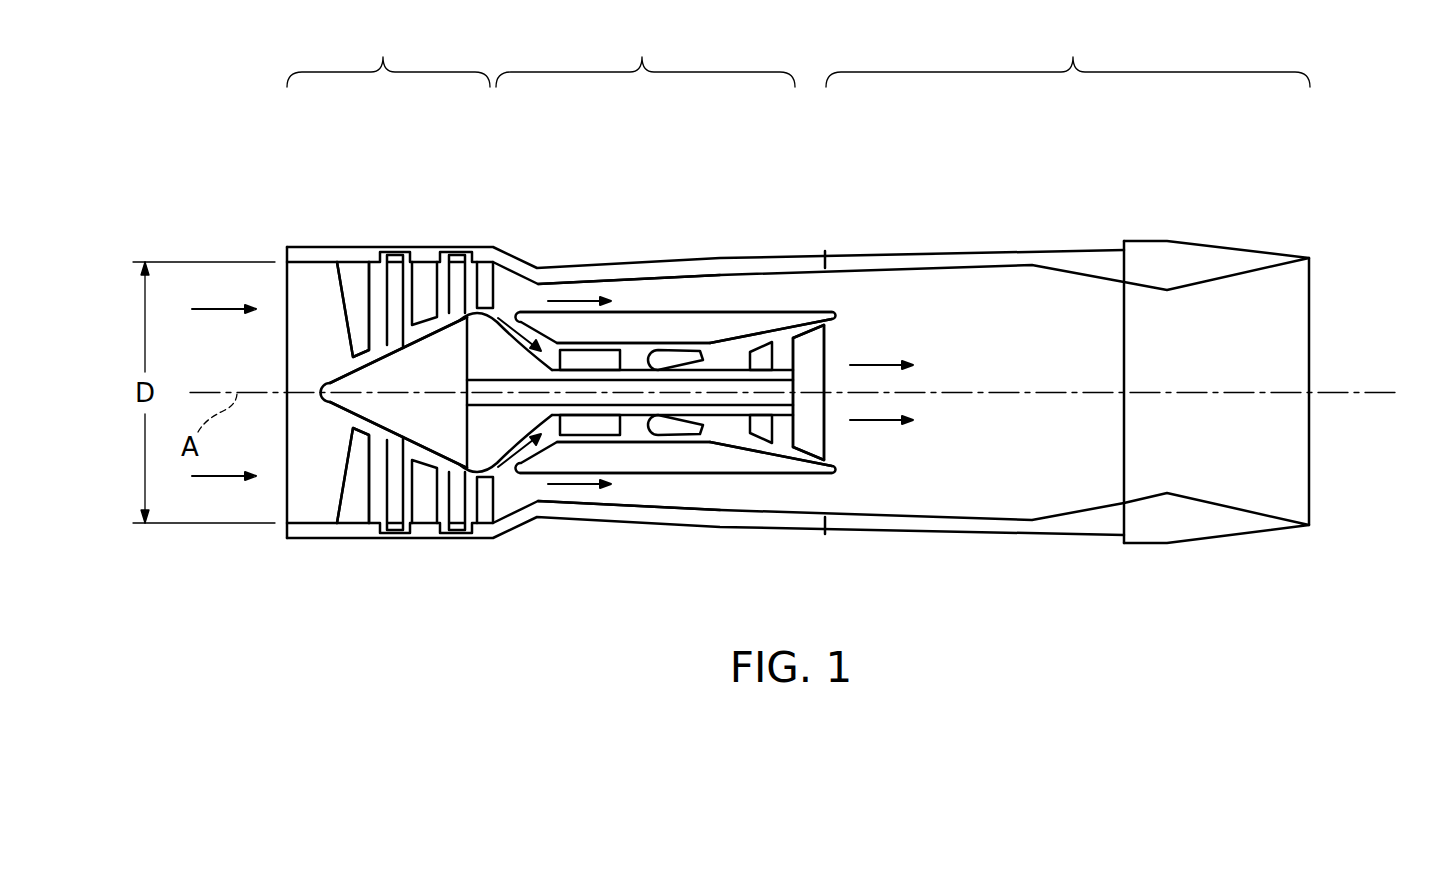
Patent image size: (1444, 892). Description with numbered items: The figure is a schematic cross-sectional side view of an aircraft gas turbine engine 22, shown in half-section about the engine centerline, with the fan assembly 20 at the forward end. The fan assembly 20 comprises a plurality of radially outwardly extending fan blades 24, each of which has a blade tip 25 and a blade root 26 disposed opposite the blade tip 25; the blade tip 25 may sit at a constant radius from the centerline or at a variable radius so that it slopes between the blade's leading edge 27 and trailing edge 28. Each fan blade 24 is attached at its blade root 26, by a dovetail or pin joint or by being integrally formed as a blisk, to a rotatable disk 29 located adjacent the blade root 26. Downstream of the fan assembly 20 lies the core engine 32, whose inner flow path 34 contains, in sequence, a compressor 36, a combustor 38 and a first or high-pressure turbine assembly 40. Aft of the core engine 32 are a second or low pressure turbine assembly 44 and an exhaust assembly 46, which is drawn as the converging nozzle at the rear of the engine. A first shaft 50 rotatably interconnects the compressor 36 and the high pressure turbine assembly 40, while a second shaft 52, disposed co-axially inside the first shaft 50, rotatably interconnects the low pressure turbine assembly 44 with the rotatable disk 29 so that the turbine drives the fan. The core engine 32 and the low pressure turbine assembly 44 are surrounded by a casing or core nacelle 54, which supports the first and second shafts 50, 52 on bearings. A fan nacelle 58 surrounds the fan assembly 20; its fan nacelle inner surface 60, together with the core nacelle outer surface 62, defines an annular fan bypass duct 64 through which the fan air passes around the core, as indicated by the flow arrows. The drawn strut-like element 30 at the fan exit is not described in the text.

The fan assembly 20 is at (388, 54).
The gas turbine engine 22 is at (1313, 142).
The fan blades 24 is at (390, 283).
The blade tip 25 is at (397, 258).
The blade root 26 is at (325, 391).
The leading edge 27 is at (390, 323).
The trailing edge 28 is at (403, 298).
The rotatable disk 29 is at (447, 435).
The strut 30 is at (453, 258).
The core engine 32 is at (645, 54).
The inner flow path 34 is at (497, 322).
The compressor 36 is at (610, 350).
The combustor 38 is at (680, 348).
The high-pressure turbine assembly 40 is at (757, 350).
The low pressure turbine assembly 44 is at (825, 445).
The exhaust assembly 46 is at (1068, 54).
The first shaft 50 is at (723, 440).
The second shaft 52 is at (778, 460).
The core nacelle 54 is at (637, 469).
The fan nacelle 58 is at (337, 530).
The fan nacelle inner surface 60 is at (672, 507).
The core nacelle outer surface 62 is at (675, 475).
The fan bypass duct 64 is at (565, 300).